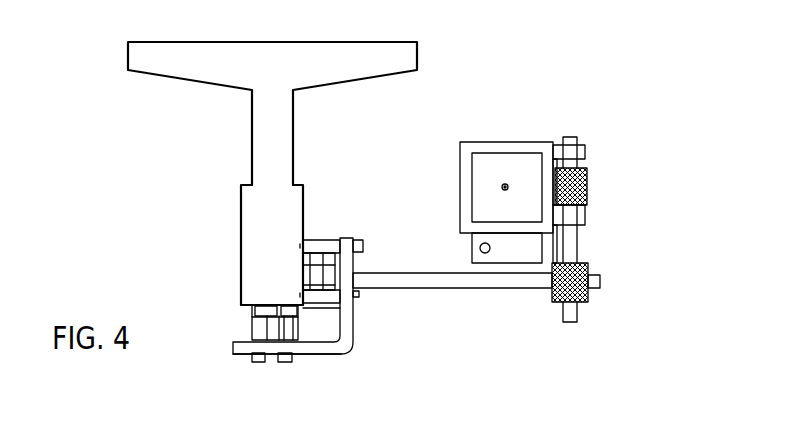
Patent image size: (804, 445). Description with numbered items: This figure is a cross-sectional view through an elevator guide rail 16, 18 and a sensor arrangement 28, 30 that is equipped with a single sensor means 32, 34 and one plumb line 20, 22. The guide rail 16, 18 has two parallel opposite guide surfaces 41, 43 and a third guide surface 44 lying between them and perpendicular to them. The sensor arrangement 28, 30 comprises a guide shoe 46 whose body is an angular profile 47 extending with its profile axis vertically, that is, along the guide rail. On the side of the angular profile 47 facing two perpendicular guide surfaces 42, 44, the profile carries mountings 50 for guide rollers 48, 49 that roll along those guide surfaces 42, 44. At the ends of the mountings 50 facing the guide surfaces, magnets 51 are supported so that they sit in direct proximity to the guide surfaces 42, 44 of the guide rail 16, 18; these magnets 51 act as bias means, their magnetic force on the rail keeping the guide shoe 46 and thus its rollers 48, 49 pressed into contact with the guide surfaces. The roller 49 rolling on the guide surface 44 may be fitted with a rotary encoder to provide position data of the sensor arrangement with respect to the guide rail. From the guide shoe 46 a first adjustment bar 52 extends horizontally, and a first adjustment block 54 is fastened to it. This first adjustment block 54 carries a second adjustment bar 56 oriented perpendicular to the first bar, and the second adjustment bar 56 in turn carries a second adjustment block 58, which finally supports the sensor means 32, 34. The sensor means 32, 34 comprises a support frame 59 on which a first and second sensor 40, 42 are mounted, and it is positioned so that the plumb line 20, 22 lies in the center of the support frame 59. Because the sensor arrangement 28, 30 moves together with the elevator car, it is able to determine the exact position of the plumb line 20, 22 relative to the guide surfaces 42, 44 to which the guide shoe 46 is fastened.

The guide rail 16 is at (286, 58).
The guide rail 18 is at (272, 113).
The plumb line 20 is at (505, 170).
The plumb line 22 is at (507, 187).
The sensor arrangement 28 is at (138, 123).
The sensor arrangement 30 is at (340, 210).
The sensor means 32 is at (549, 129).
The sensor means 34 is at (530, 204).
The first sensor 40 is at (584, 160).
The guide surface 41 is at (240, 231).
The second sensor 42 is at (474, 247).
The guide surface 43 is at (315, 220).
The third guide surface 44 is at (243, 309).
The guide shoe 46 is at (317, 362).
The angular profile 47 is at (272, 354).
The guide roller 48 is at (357, 270).
The guide roller 49 is at (347, 356).
The mountings 50 is at (334, 240).
The magnets 51 is at (303, 245).
The first adjustment bar 52 is at (502, 290).
The first adjustment block 54 is at (588, 298).
The second adjustment bar 56 is at (573, 243).
The second adjustment block 58 is at (588, 178).
The support frame 59 is at (471, 143).